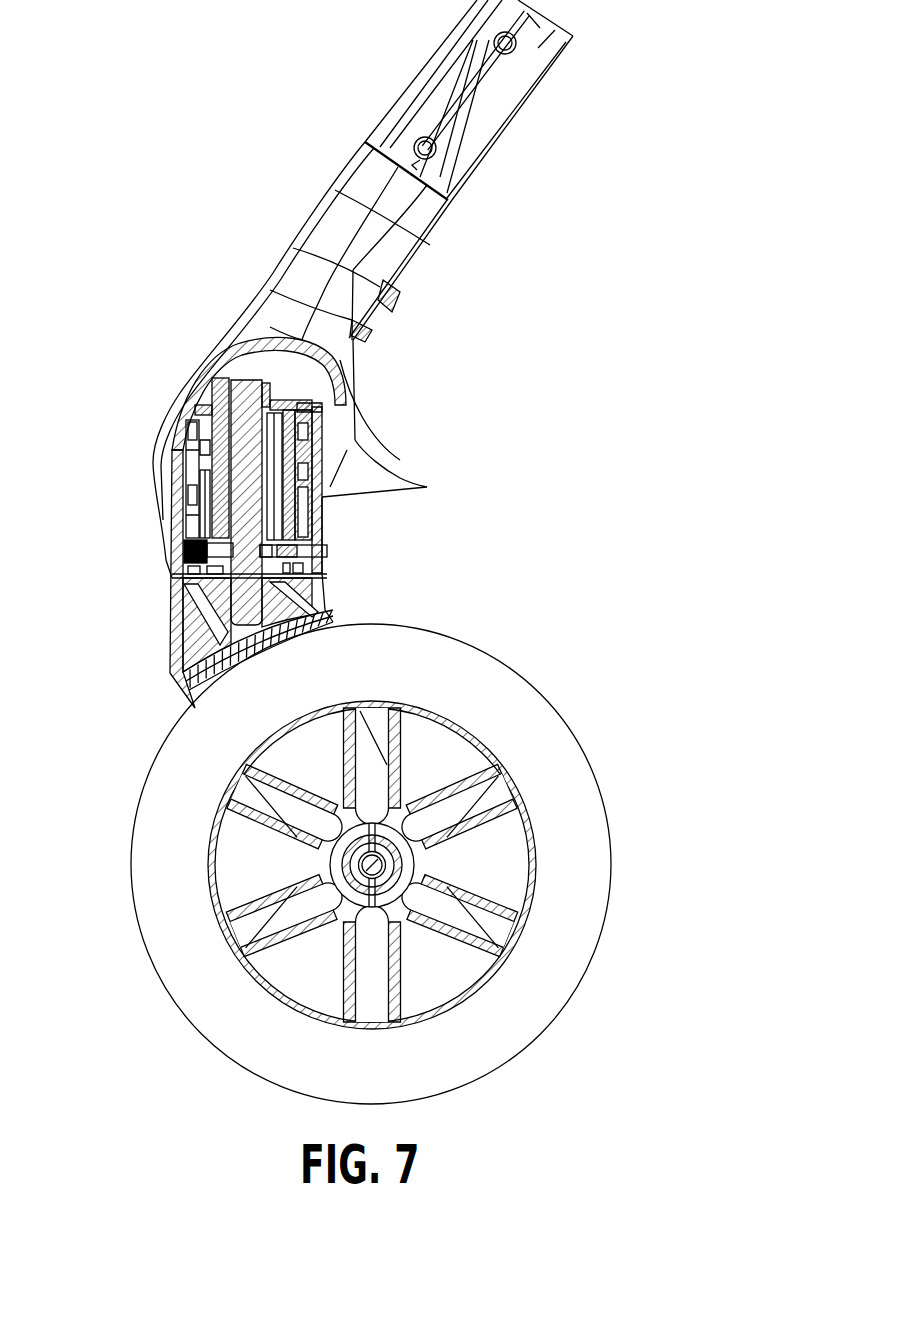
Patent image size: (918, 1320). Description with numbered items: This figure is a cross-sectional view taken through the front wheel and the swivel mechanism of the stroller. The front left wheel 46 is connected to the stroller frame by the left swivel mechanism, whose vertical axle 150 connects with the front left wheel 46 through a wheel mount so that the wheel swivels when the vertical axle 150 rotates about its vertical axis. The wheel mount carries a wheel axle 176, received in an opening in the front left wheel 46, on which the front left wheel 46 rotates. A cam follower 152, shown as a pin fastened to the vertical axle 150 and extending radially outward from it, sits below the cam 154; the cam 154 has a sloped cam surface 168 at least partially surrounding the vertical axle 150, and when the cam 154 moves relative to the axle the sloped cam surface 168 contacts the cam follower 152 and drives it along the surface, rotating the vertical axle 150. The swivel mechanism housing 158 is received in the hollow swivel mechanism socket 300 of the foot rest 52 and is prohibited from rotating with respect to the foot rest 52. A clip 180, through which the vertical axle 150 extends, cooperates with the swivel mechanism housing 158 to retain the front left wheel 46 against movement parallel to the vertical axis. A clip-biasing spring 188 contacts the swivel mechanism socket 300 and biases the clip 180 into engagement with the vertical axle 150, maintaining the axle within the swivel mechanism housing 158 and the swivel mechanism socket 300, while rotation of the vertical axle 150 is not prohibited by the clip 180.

The foot rest 52 is at (462, 297).
The vertical axle 150 is at (243, 418).
The cam 154 is at (223, 443).
The sloped cam surface 168 is at (198, 477).
The swivel mechanism socket 300 is at (178, 497).
The cam follower 152 is at (218, 492).
The clip-biasing spring 188 is at (182, 548).
The swivel mechanism housing 158 is at (303, 453).
The clip 180 is at (300, 553).
The front left wheel 46 is at (445, 665).
The wheel axle 176 is at (320, 865).